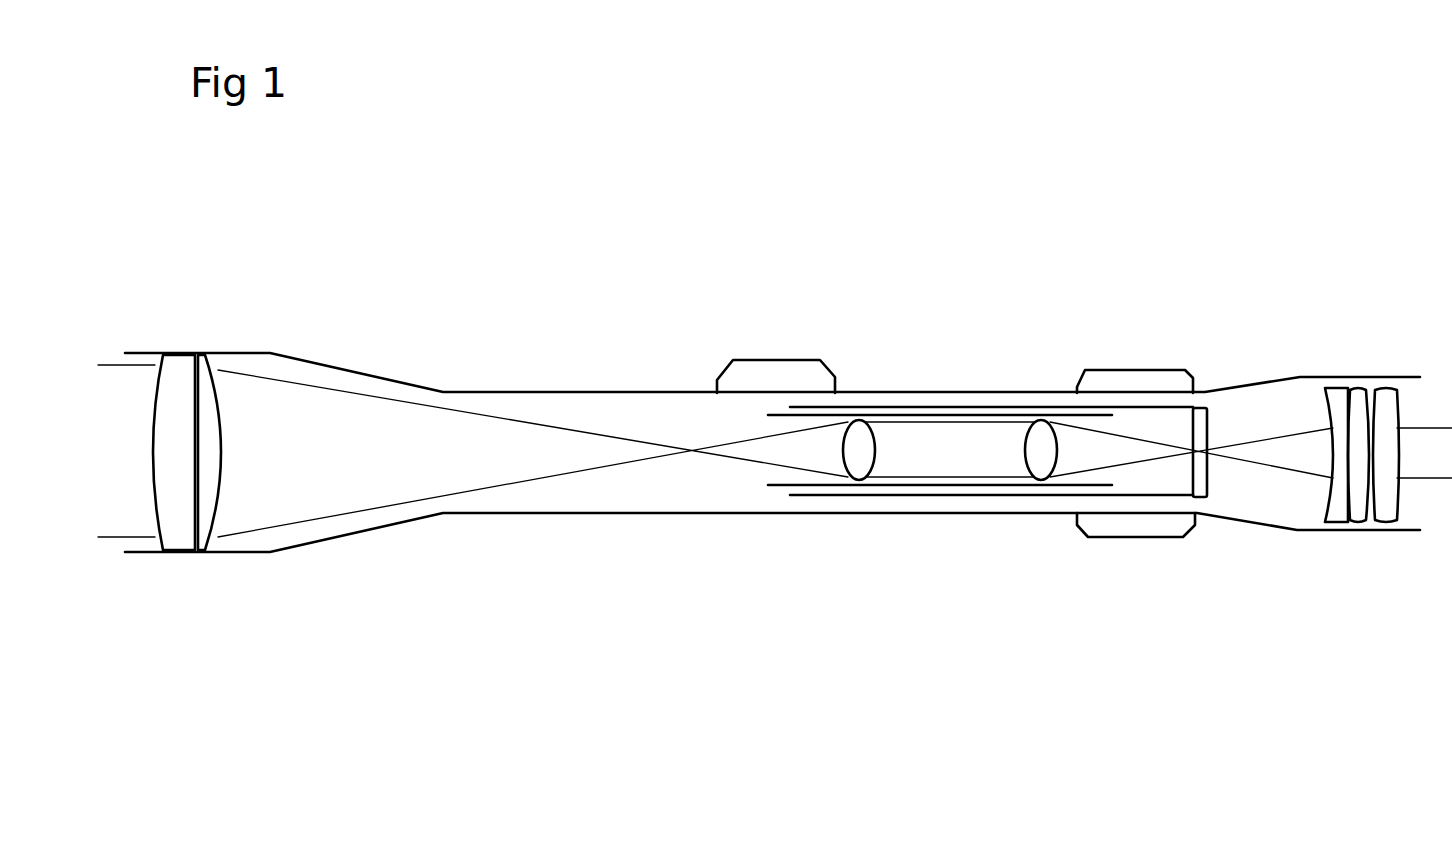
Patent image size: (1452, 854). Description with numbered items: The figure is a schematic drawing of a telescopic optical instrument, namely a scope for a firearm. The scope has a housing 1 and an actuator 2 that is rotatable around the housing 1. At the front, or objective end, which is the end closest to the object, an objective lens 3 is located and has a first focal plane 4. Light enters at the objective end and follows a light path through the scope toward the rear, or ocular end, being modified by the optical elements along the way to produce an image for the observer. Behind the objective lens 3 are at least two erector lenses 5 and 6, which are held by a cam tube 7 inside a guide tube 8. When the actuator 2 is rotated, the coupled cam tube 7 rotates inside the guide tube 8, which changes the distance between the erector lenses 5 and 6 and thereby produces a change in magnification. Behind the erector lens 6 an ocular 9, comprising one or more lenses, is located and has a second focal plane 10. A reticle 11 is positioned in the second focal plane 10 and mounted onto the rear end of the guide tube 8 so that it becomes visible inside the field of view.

The housing 1 is at (375, 373).
The actuator 2 is at (1112, 377).
The objective lens 3 is at (185, 513).
The first focal plane 4 is at (697, 457).
The erector lens 5 is at (863, 462).
The erector lens 6 is at (1045, 462).
The cam tube 7 is at (790, 486).
The guide tube 8 is at (1160, 496).
The ocular 9 is at (1358, 403).
The second focal plane 10 is at (1195, 460).
The reticle 11 is at (1212, 401).